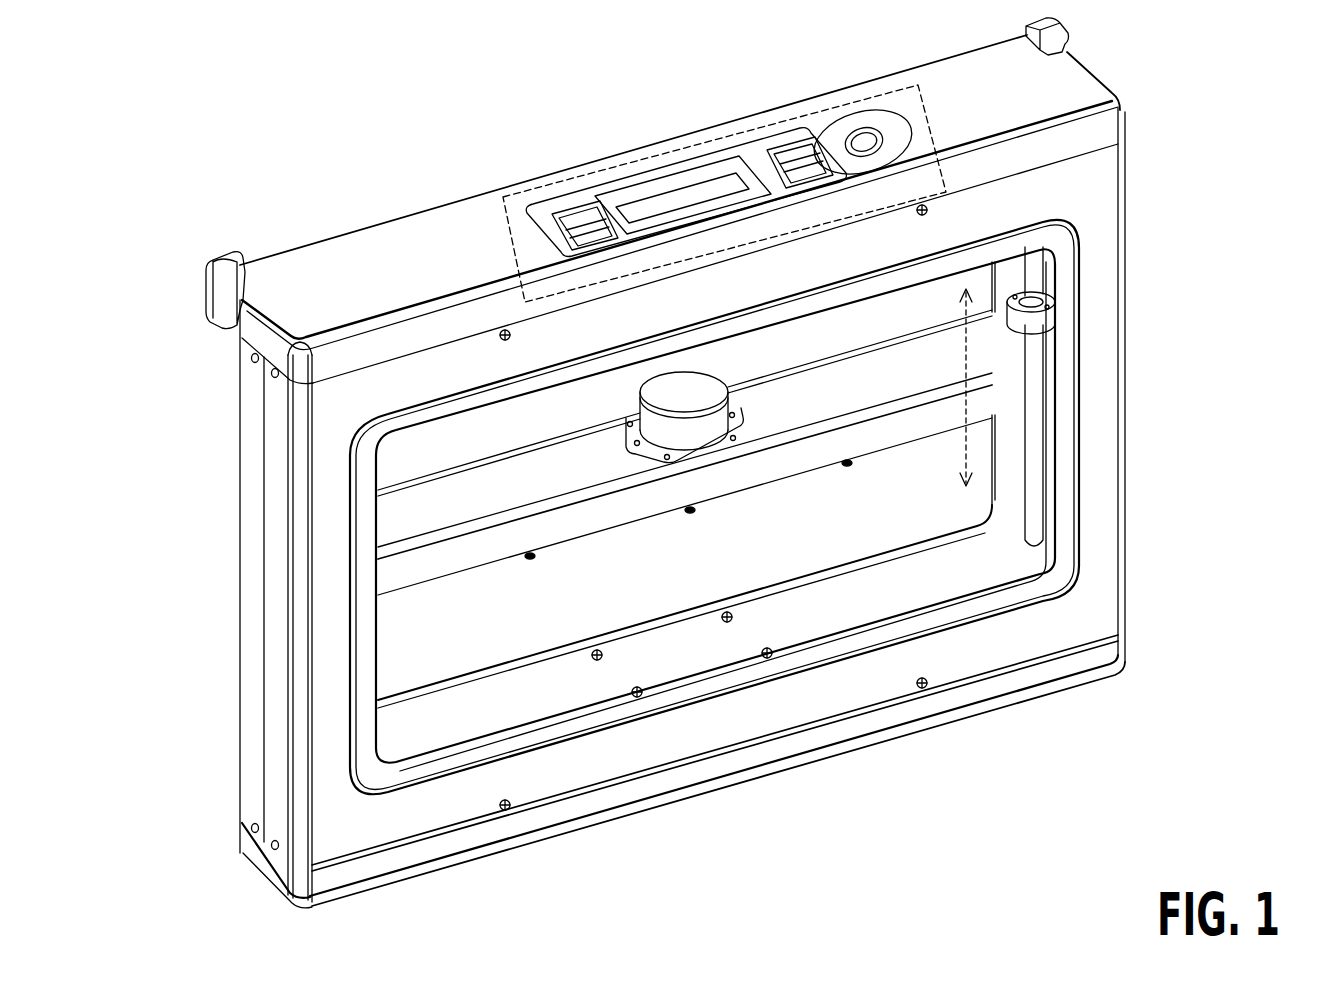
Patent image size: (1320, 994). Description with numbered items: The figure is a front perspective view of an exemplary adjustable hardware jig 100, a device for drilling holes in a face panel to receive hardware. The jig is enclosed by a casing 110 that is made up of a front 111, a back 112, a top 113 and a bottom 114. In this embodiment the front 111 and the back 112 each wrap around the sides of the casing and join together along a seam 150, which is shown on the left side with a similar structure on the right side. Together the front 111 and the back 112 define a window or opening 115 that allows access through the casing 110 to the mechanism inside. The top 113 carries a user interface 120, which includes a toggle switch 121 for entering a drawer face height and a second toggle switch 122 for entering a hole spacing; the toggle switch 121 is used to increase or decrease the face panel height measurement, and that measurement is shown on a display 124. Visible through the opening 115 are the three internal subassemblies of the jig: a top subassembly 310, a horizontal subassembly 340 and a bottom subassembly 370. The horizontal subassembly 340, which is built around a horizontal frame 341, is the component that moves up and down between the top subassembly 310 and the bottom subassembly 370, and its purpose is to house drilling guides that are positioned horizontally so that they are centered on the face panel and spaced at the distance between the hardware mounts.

The adjustable hardware jig 100 is at (792, 62).
The casing 110 is at (663, 745).
The front 111 is at (848, 683).
The back 112 is at (250, 515).
The top 113 is at (338, 248).
The bottom 114 is at (533, 850).
The window or opening 115 is at (840, 523).
The user interface 120 is at (503, 200).
The toggle switch 121 is at (563, 202).
The toggle switch 122 is at (750, 150).
The display 124 is at (653, 202).
The seam 150 is at (262, 665).
The top subassembly 310 is at (262, 340).
The horizontal subassembly 340 is at (880, 437).
The horizontal frame 341 is at (946, 387).
The bottom subassembly 370 is at (258, 847).